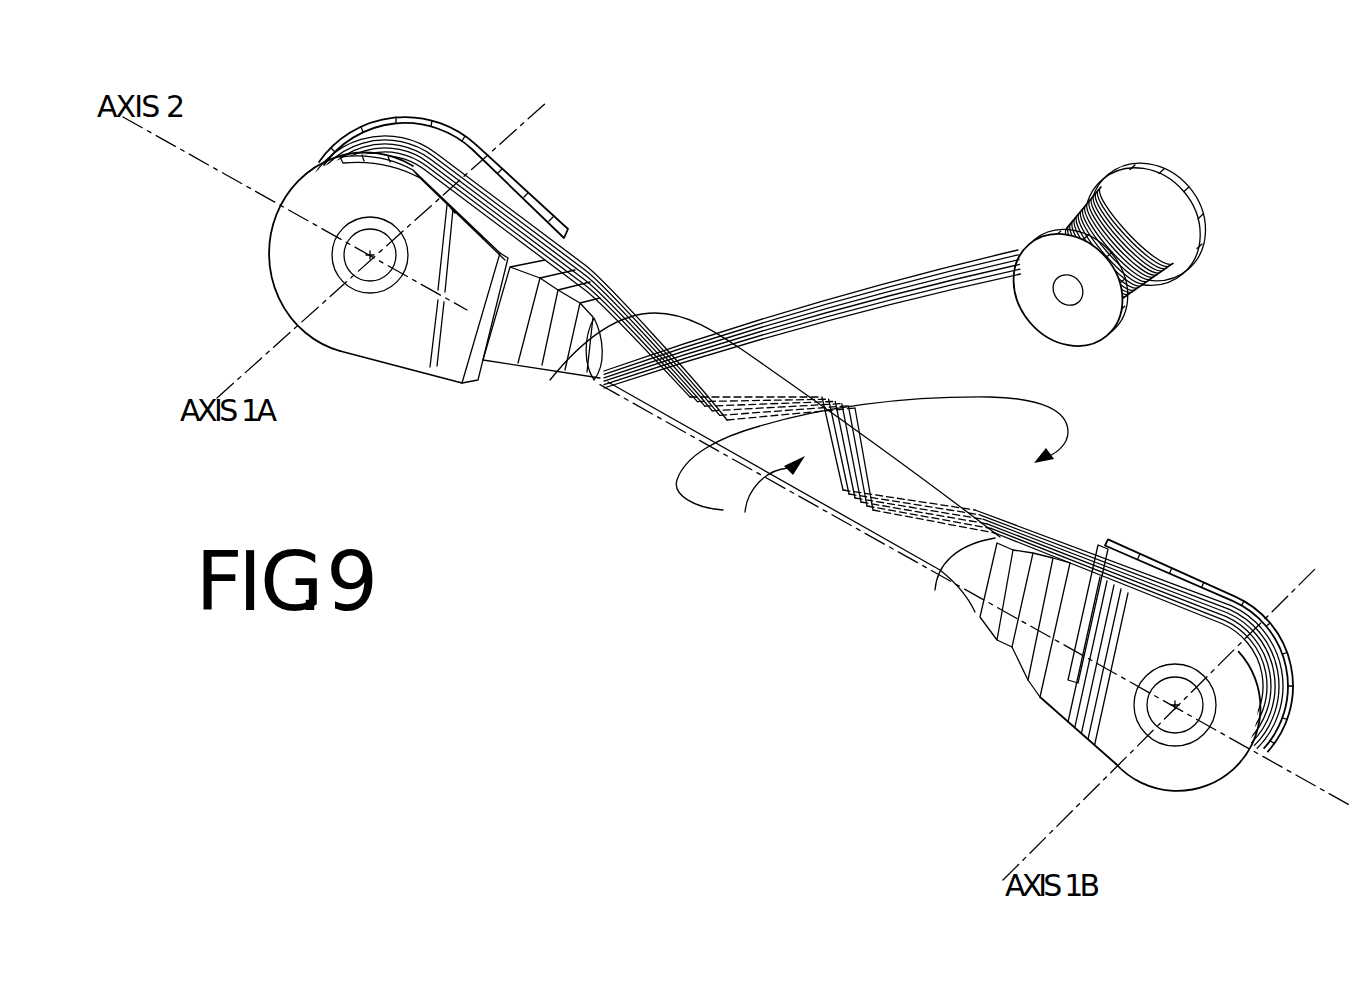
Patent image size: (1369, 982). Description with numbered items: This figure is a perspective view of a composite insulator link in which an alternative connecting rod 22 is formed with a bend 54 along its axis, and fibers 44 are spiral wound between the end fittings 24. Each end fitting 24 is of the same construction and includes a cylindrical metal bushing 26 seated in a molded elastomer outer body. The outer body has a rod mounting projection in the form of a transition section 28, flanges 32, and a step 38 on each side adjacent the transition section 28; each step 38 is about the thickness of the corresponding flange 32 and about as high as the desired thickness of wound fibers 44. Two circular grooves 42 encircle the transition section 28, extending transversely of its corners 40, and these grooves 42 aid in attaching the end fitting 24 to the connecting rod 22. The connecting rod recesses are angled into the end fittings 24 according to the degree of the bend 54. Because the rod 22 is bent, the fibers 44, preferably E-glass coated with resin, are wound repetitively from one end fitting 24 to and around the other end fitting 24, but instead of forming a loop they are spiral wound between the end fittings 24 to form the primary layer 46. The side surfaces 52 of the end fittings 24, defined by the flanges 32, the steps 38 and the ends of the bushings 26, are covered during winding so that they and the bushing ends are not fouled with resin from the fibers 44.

The connecting rod 22 is at (923, 467).
The end fitting 24 is at (437, 105).
The bushing 26 is at (370, 288).
The transition section 28 is at (488, 363).
The flanges 32 is at (482, 228).
The step 38 is at (463, 372).
The corners 40 is at (596, 381).
The grooves 42 is at (517, 362).
The fibers 44 is at (916, 285).
The primary layer 46 is at (1083, 536).
The side surfaces 52 is at (396, 346).
The bend 54 is at (767, 499).